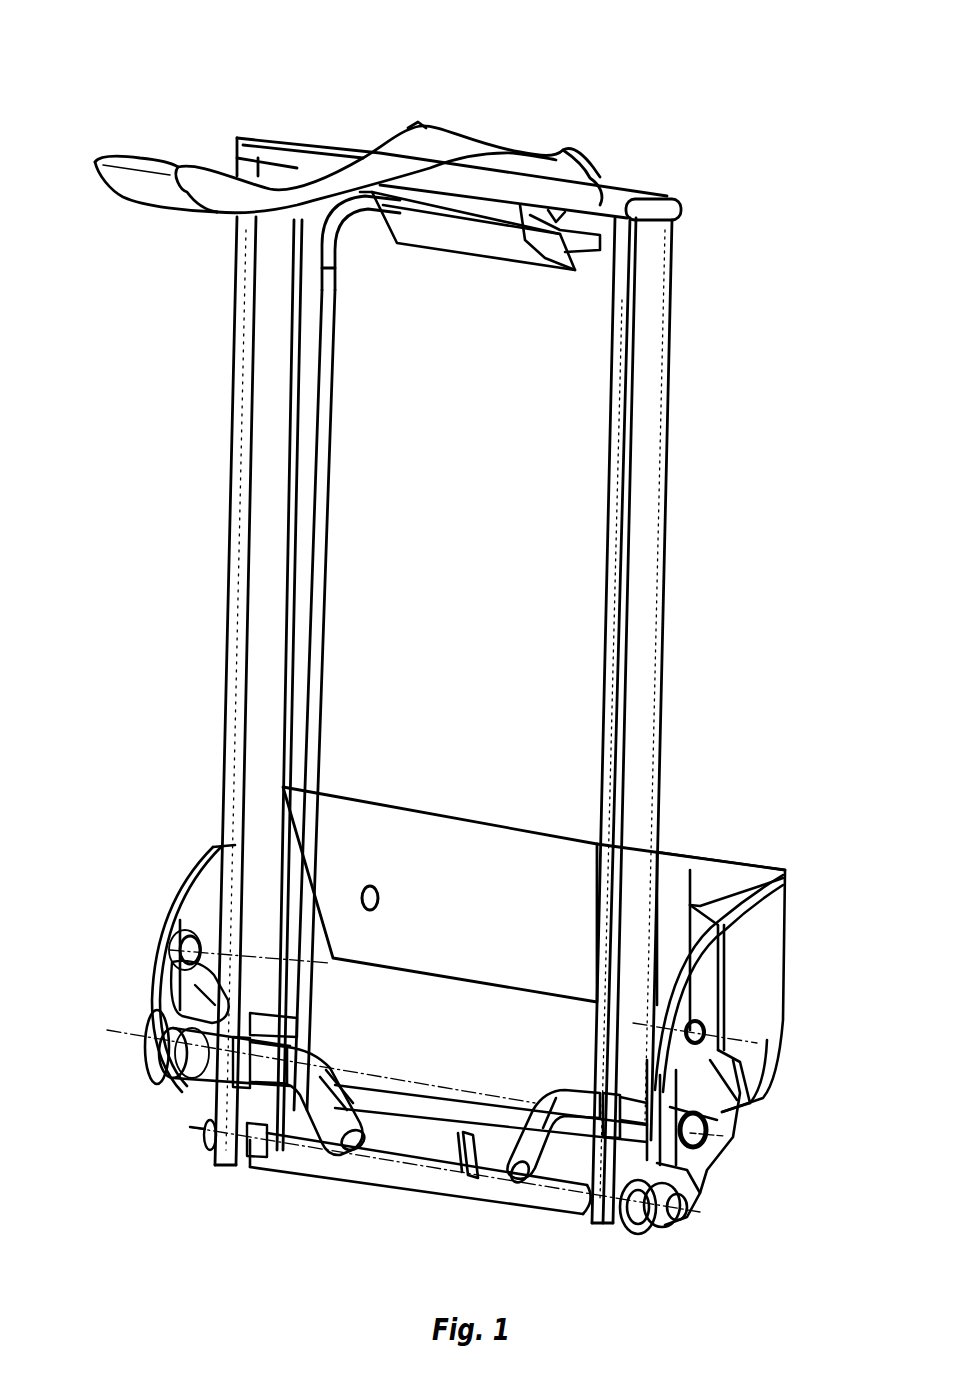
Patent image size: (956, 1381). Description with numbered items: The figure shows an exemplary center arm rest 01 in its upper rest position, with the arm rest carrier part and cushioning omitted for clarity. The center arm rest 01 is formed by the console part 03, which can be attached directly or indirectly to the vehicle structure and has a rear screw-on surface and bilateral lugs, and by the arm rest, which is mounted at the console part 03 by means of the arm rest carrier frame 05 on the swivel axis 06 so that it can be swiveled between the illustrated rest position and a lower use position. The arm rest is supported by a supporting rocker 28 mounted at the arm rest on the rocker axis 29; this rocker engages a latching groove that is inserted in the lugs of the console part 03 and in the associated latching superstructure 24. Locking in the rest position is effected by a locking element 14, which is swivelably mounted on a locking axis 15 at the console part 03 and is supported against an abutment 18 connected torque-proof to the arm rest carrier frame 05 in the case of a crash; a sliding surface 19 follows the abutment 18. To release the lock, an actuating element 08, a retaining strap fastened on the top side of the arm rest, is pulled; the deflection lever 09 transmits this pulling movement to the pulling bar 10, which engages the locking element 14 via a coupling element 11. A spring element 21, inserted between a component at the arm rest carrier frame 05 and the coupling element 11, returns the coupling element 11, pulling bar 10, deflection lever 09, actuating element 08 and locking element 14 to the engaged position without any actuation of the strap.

The center arm rest 01 is at (797, 63).
The console part 03 is at (444, 847).
The arm rest carrier frame 05 is at (640, 577).
The swivel axis 06 is at (140, 1035).
The actuating element 08 is at (157, 190).
The deflection lever 09 is at (513, 243).
The pulling bar 10 is at (322, 547).
The coupling element 11 is at (403, 1120).
The locking element 14 is at (163, 993).
The locking axis 15 is at (157, 947).
The abutment 18 is at (163, 1023).
The sliding surface 19 is at (187, 1090).
The spring element 21 is at (457, 1133).
The latching superstructure 24 is at (733, 880).
The supporting rocker 28 is at (697, 1190).
The rocker axis 29 is at (702, 1213).